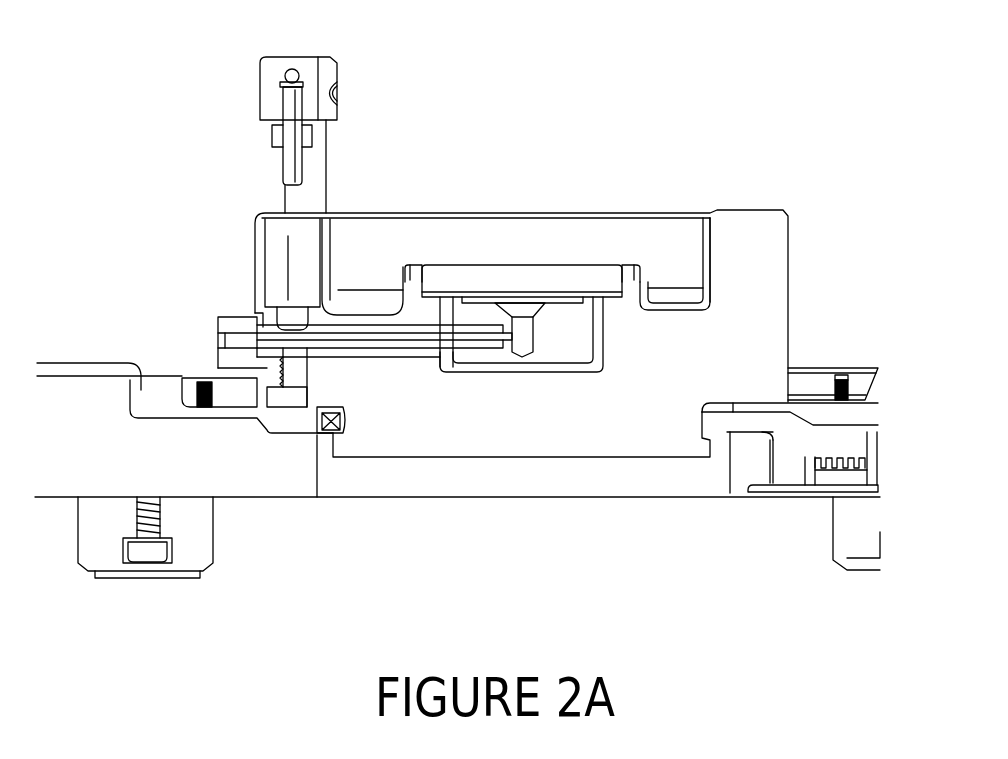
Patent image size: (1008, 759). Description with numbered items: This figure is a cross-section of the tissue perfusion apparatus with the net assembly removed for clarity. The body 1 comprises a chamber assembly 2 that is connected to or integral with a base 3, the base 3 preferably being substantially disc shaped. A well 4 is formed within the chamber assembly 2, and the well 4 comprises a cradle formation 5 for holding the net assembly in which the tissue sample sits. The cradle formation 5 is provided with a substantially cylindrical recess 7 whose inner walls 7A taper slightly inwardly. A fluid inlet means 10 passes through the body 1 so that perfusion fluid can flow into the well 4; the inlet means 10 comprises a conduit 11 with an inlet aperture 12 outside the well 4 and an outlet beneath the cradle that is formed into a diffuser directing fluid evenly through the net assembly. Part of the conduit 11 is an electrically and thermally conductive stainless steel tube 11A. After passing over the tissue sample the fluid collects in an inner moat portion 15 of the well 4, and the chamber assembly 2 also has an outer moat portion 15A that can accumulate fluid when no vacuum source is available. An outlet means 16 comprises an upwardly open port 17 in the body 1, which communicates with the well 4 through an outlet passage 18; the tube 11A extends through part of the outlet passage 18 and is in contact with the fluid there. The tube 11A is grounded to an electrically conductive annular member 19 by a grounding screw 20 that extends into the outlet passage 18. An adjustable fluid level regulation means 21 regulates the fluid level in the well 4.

The body 1 is at (757, 180).
The chamber assembly 2 is at (384, 209).
The base 3 is at (305, 498).
The well 4 is at (487, 280).
The cradle formation 5 is at (620, 263).
The recess 7 is at (570, 280).
The inner walls 7A is at (425, 265).
The fluid inlet means 10 is at (218, 318).
The conduit 11 is at (236, 342).
The stainless steel tube 11A is at (413, 345).
The inlet aperture 12 is at (212, 340).
The inner moat portion 15 is at (607, 318).
The outer moat portion 15A is at (663, 300).
The outlet means 16 is at (262, 240).
The upwardly open port 17 is at (283, 238).
The outlet passage 18 is at (363, 355).
The electrically conductive annular member 19 is at (40, 356).
The grounding screw 20 is at (292, 367).
The adjustable fluid level regulation means 21 is at (302, 57).